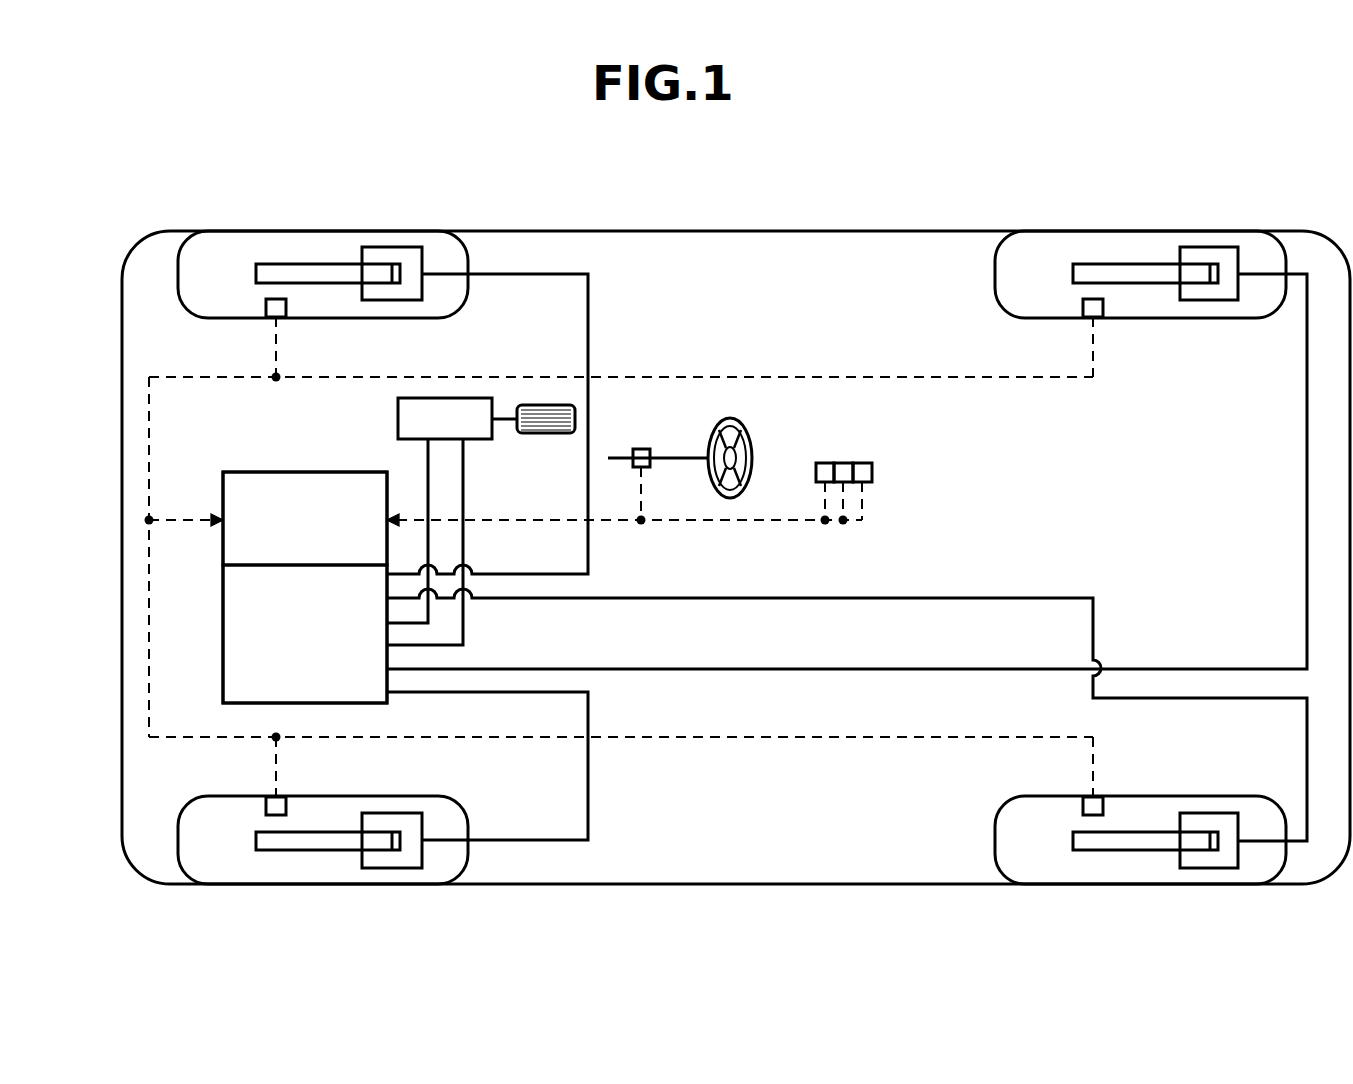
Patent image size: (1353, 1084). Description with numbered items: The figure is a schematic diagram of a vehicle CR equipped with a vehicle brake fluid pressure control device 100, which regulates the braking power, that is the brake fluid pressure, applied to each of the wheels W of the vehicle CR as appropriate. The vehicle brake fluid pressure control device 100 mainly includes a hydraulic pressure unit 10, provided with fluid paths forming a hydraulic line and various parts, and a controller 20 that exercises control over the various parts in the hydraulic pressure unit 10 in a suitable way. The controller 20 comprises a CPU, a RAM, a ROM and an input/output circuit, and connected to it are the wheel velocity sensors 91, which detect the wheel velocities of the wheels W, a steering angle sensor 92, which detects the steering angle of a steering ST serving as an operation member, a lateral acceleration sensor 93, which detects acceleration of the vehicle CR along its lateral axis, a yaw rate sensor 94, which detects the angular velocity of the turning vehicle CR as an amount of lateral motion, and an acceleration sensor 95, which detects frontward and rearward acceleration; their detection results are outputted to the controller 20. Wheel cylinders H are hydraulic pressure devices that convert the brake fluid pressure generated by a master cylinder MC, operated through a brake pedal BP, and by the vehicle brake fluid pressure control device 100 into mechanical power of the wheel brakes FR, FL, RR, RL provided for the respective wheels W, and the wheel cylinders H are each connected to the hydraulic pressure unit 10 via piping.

The vehicle brake fluid pressure control device 100 is at (210, 593).
The hydraulic pressure unit 10 is at (228, 642).
The controller 20 is at (228, 497).
The wheel velocity sensors 91 is at (286, 308).
The steering angle sensor 92 is at (641, 449).
The lateral acceleration sensor 93 is at (821, 463).
The yaw rate sensor 94 is at (847, 463).
The acceleration sensor 95 is at (872, 472).
The vehicle CR is at (737, 216).
The wheels W is at (322, 243).
The wheel cylinders H is at (390, 255).
The wheel brake FR is at (277, 272).
The wheel brake FL is at (277, 843).
The wheel brake RR is at (1095, 272).
The wheel brake RL is at (1095, 843).
The master cylinder MC is at (398, 415).
The brake pedal BP is at (552, 435).
The steering ST is at (742, 430).